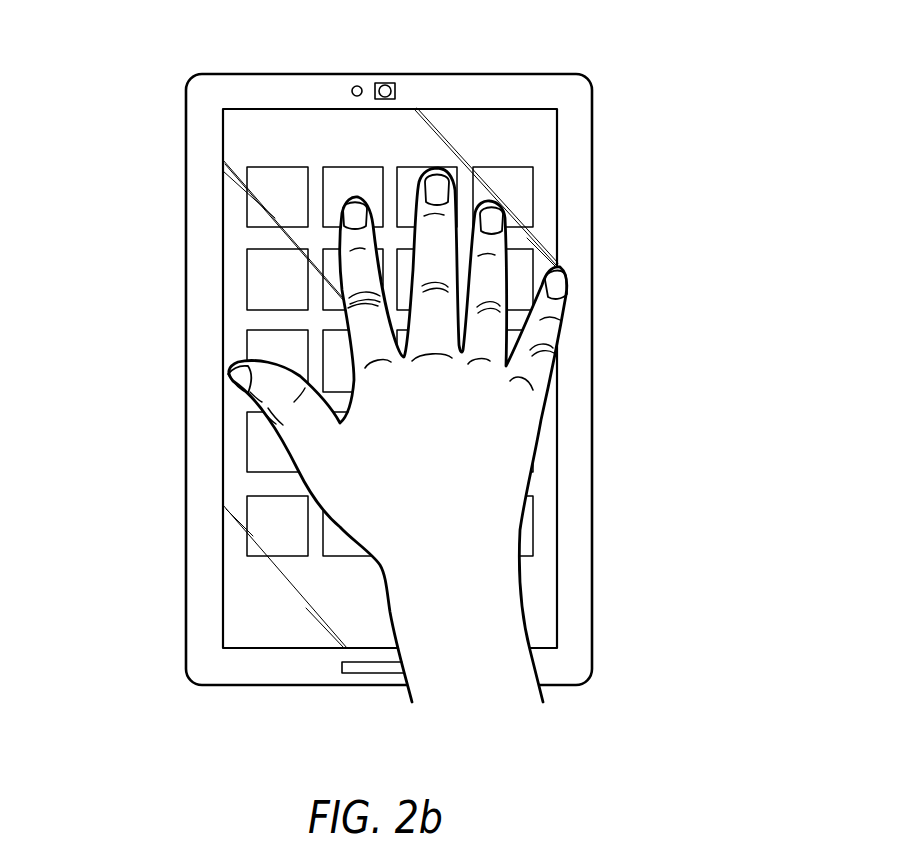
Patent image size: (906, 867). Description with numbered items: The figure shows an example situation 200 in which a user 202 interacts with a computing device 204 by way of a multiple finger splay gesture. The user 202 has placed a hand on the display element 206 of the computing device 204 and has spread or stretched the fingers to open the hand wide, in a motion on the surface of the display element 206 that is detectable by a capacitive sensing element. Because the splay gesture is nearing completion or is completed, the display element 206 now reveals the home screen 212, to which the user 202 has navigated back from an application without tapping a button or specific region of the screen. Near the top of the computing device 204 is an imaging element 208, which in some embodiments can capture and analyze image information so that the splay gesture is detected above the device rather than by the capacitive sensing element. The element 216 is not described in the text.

The example situation 200 is at (416, 342).
The user 202 is at (462, 607).
The computing device 204 is at (593, 147).
The display element 206 is at (302, 378).
The imaging element 208 is at (386, 82).
The home screen 212 is at (242, 233).
The icon 216 is at (333, 316).